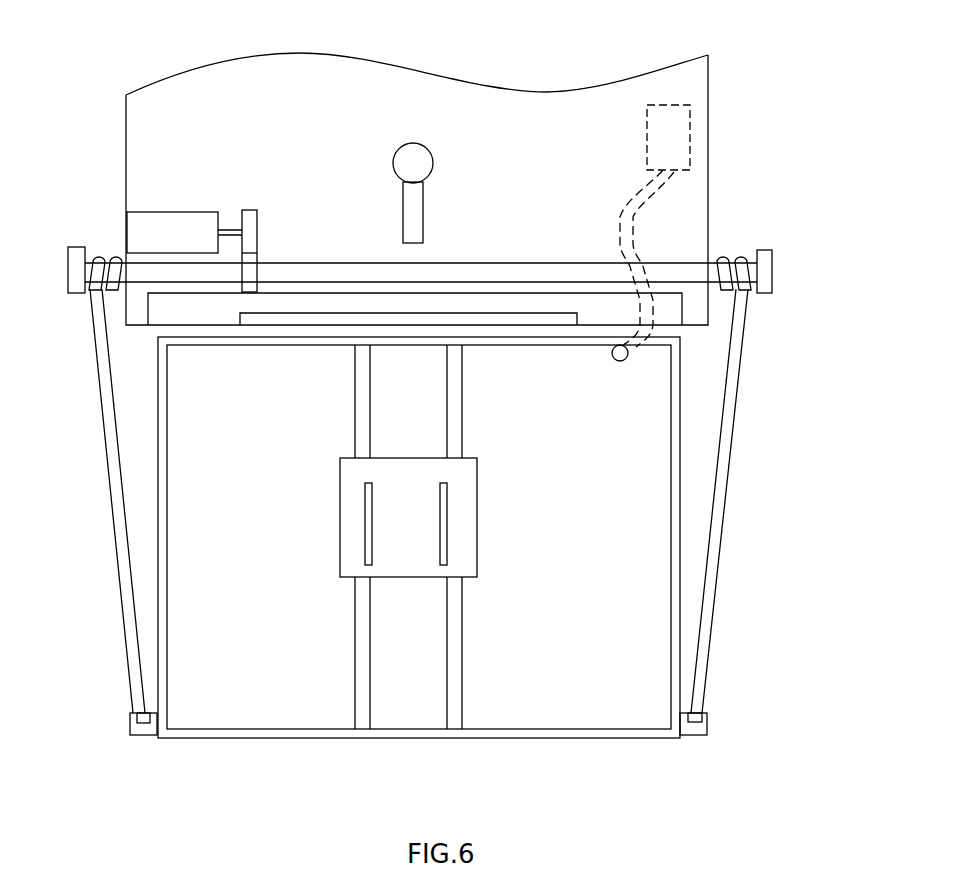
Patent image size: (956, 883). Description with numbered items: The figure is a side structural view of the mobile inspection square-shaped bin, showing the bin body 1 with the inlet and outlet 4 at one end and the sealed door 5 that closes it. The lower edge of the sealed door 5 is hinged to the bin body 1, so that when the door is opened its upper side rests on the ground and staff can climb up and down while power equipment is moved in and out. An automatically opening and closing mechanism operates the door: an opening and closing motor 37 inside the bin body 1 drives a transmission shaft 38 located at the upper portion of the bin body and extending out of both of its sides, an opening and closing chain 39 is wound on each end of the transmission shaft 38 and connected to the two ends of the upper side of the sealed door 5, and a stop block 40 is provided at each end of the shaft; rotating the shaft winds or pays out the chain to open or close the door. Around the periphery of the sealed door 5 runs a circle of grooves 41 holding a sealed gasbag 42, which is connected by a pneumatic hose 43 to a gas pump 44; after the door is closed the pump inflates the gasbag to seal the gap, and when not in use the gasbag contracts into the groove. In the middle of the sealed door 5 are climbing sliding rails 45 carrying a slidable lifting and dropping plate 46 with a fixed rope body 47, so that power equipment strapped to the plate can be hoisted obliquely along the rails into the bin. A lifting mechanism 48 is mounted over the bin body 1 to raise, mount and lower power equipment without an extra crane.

The bin body 1 is at (302, 73).
The inlet and outlet 4 is at (440, 300).
The sealed door 5 is at (512, 673).
The opening and closing motor 37 is at (178, 225).
The transmission shaft 38 is at (307, 272).
The opening and closing chain 39 is at (735, 380).
The stop block 40 is at (763, 275).
The groove 41 is at (677, 583).
The sealed gasbag 42 is at (672, 693).
The pneumatic hose 43 is at (628, 210).
The gas pump 44 is at (665, 122).
The climbing sliding rails 45 is at (457, 368).
The lifting and dropping plate 46 is at (462, 532).
The fixed rope body 47 is at (442, 557).
The lifting mechanism 48 is at (417, 163).